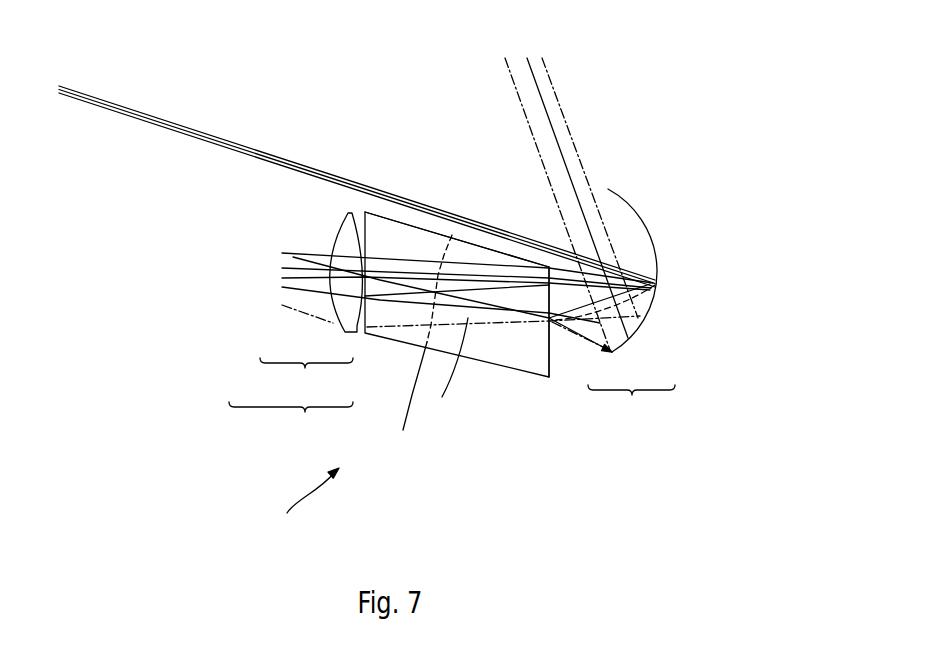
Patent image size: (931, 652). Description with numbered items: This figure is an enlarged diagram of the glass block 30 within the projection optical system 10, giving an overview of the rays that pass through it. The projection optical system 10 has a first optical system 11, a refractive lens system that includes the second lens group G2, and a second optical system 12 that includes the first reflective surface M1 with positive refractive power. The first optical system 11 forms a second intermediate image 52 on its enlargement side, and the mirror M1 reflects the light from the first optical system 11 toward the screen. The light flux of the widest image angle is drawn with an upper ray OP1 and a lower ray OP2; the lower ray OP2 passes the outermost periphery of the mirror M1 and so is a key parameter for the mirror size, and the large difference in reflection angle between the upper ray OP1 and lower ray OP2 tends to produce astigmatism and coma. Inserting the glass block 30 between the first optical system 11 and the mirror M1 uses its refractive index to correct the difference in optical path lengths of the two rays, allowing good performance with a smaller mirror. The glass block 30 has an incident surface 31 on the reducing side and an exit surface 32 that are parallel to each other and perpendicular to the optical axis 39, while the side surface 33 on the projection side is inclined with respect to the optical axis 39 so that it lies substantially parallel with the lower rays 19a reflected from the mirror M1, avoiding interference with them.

The lower rays 19a is at (237, 145).
The side surface 33 is at (392, 220).
The optical axis 39 is at (452, 235).
The second intermediate image 52 is at (655, 285).
The first reflective surface M1 is at (649, 305).
The second lens group G2 is at (306, 378).
The first optical system 11 is at (291, 422).
The incident surface 31 is at (359, 336).
The upper ray OP1 is at (445, 371).
The lower ray OP2 is at (403, 401).
The glass block 30 is at (518, 355).
The exit surface 32 is at (550, 353).
The second optical system 12 is at (631, 403).
The projection optical system 10 is at (308, 506).